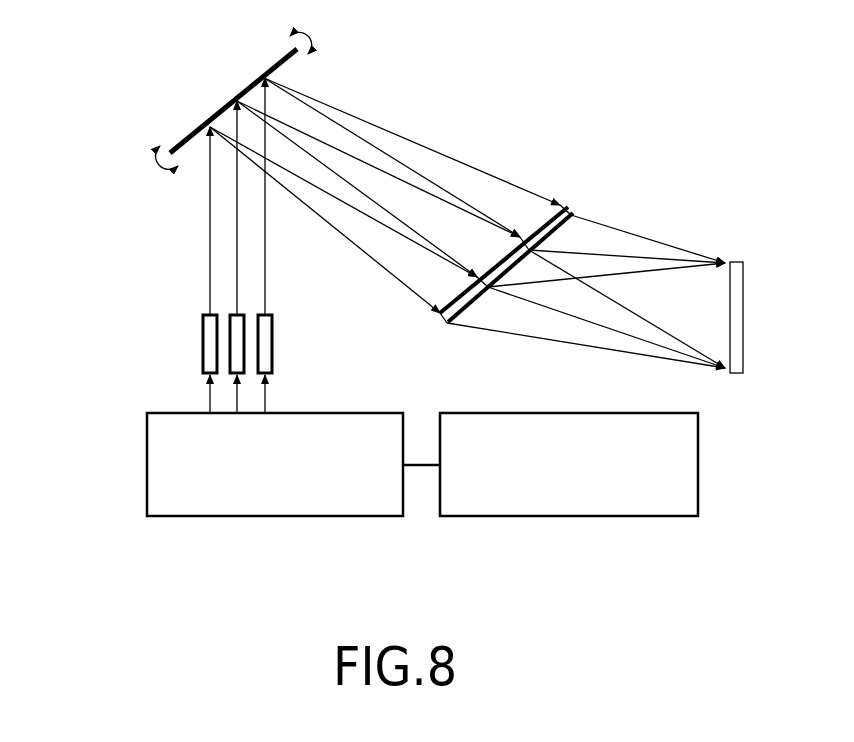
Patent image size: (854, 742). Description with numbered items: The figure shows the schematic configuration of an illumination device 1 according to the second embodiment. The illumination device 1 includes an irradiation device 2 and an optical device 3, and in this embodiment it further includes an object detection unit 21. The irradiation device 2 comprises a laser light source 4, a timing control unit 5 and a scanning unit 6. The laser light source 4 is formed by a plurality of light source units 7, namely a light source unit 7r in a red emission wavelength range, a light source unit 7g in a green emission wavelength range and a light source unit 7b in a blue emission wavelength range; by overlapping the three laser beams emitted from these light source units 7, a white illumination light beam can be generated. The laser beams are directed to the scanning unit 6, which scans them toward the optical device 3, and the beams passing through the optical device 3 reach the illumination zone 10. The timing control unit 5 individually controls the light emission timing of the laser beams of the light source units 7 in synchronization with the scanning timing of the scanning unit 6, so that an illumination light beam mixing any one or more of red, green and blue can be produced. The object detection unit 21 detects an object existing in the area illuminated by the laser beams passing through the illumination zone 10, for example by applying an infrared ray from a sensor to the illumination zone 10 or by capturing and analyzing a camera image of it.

The illumination device 1 is at (388, 566).
The irradiation device 2 is at (137, 208).
The optical device 3 is at (576, 206).
The laser light source 4 is at (104, 300).
The light source units 7 is at (194, 343).
The light source unit in red emission wavelength range 7r is at (203, 325).
The light source unit in green emission wavelength range 7g is at (237, 343).
The light source unit in blue emission wavelength range 7b is at (263, 360).
The timing control unit 5 is at (147, 462).
The scanning unit 6 is at (242, 93).
The illumination zone 10 is at (742, 376).
The object detection unit 21 is at (505, 412).